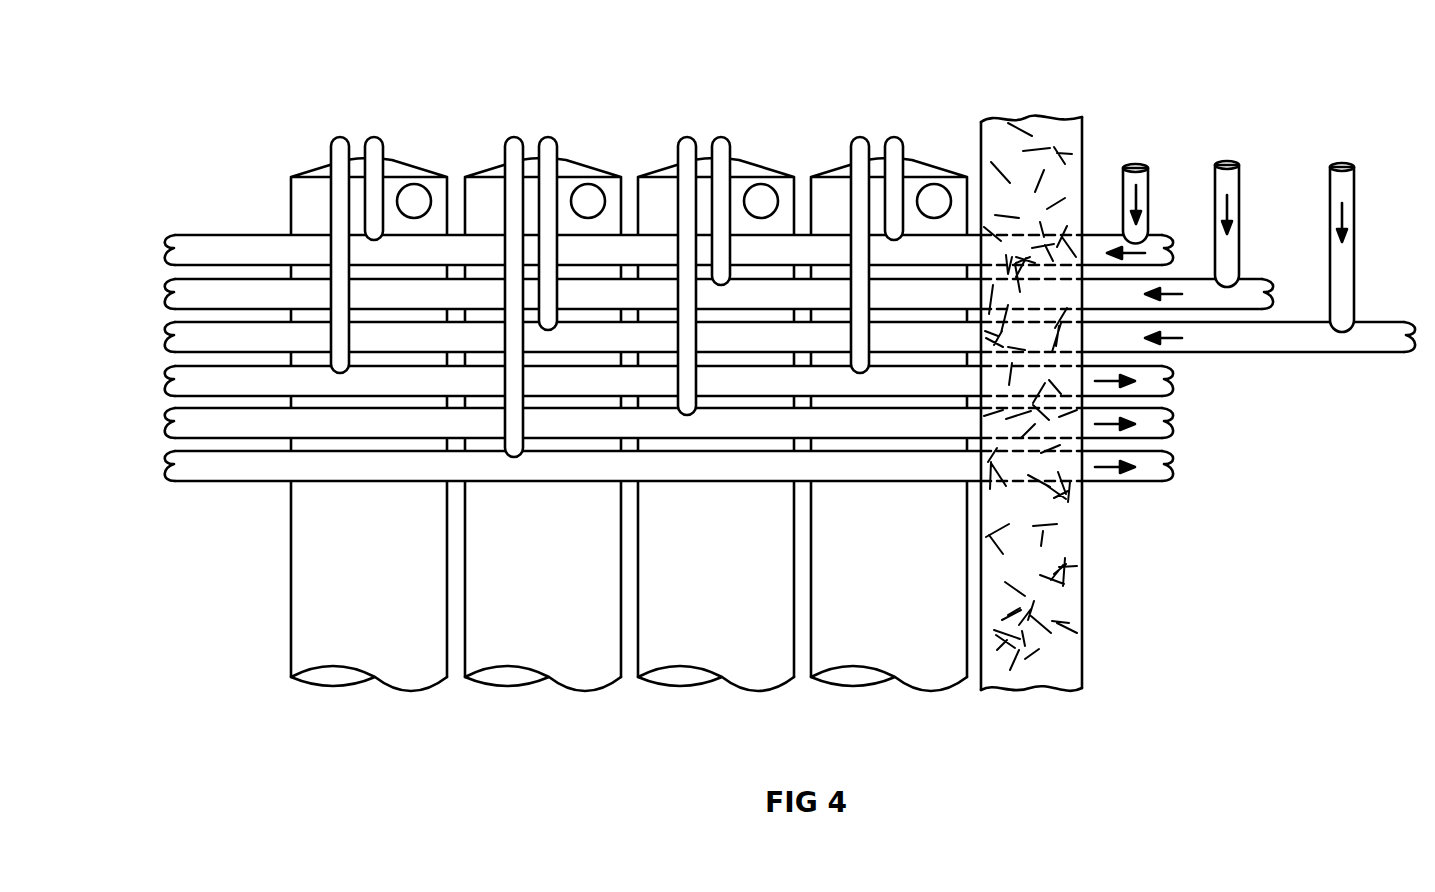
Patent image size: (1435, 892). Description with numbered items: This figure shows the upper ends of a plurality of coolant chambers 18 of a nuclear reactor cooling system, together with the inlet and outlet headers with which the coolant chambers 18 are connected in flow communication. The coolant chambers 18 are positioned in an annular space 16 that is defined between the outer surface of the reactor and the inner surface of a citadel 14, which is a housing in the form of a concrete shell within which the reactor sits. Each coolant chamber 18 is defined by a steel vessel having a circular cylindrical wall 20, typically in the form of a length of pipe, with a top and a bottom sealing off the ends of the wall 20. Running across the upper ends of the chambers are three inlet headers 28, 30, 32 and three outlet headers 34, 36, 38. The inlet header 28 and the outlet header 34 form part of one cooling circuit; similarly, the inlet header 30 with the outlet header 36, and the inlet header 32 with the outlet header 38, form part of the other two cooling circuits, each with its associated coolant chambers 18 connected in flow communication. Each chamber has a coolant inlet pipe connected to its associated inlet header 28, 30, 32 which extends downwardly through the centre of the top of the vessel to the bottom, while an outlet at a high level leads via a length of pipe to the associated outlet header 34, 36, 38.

The citadel 14 is at (1037, 150).
The annular space 16 is at (926, 118).
The coolant chamber 18 is at (837, 695).
The circular cylindrical wall 20 is at (510, 645).
The inlet header 28 is at (220, 248).
The inlet header 30 is at (182, 293).
The inlet header 32 is at (182, 336).
The outlet header 34 is at (182, 380).
The outlet header 36 is at (182, 422).
The outlet header 38 is at (182, 465).